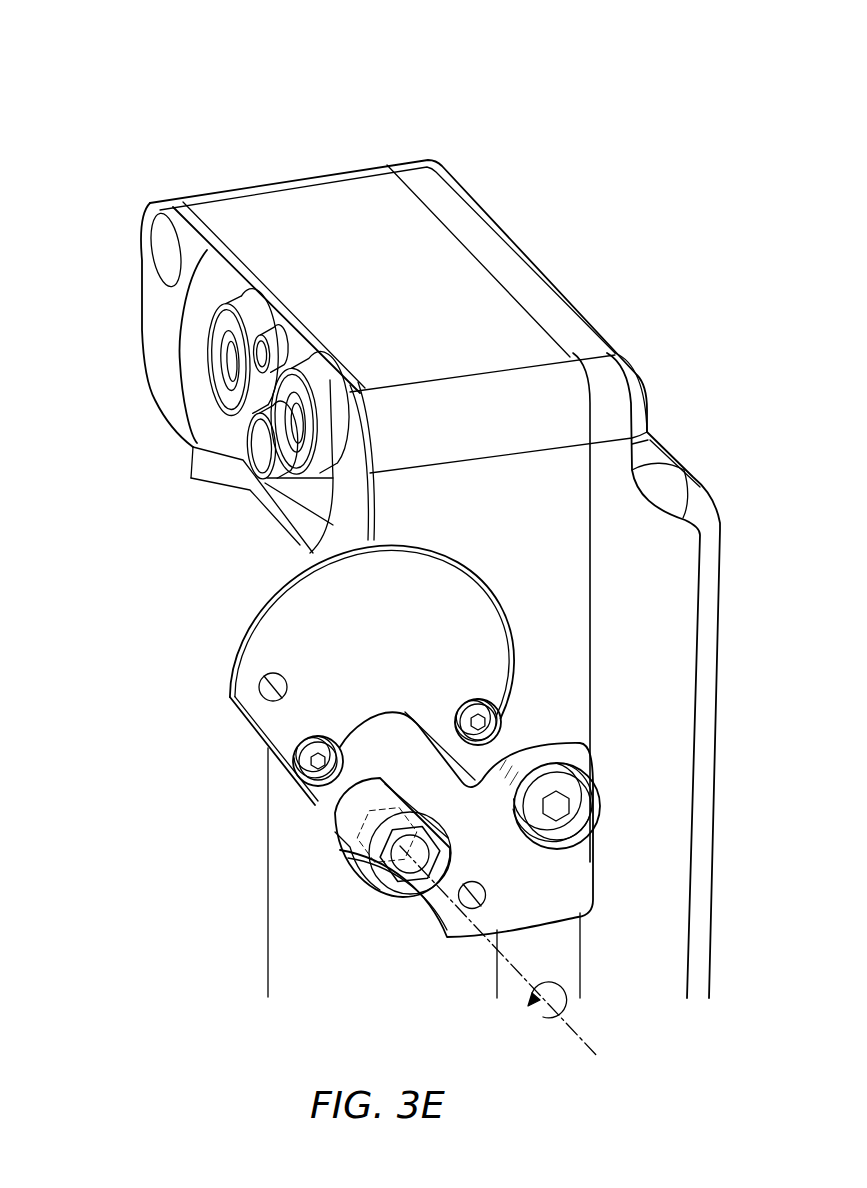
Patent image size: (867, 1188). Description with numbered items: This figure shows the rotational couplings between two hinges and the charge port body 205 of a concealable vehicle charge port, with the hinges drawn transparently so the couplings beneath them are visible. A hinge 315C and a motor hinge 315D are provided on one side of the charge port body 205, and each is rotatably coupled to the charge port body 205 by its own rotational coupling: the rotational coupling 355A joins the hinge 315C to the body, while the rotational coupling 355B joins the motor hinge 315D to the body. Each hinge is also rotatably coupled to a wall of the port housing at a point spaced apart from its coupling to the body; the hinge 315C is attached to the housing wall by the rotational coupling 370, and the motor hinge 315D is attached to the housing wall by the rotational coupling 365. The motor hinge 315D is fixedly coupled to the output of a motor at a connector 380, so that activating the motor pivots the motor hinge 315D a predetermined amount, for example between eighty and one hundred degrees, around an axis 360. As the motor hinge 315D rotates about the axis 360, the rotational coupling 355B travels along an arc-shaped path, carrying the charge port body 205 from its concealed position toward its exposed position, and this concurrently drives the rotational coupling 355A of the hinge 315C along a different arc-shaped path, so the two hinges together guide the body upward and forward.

The charge port body 205 is at (186, 100).
The hinge 315C is at (498, 603).
The motor hinge 315D is at (597, 845).
The rotational coupling 355A is at (455, 680).
The rotational coupling 355B is at (555, 748).
The axis 360 is at (575, 1035).
The rotational coupling 365 is at (352, 865).
The rotational coupling 370 is at (275, 750).
The connector 380 is at (363, 897).